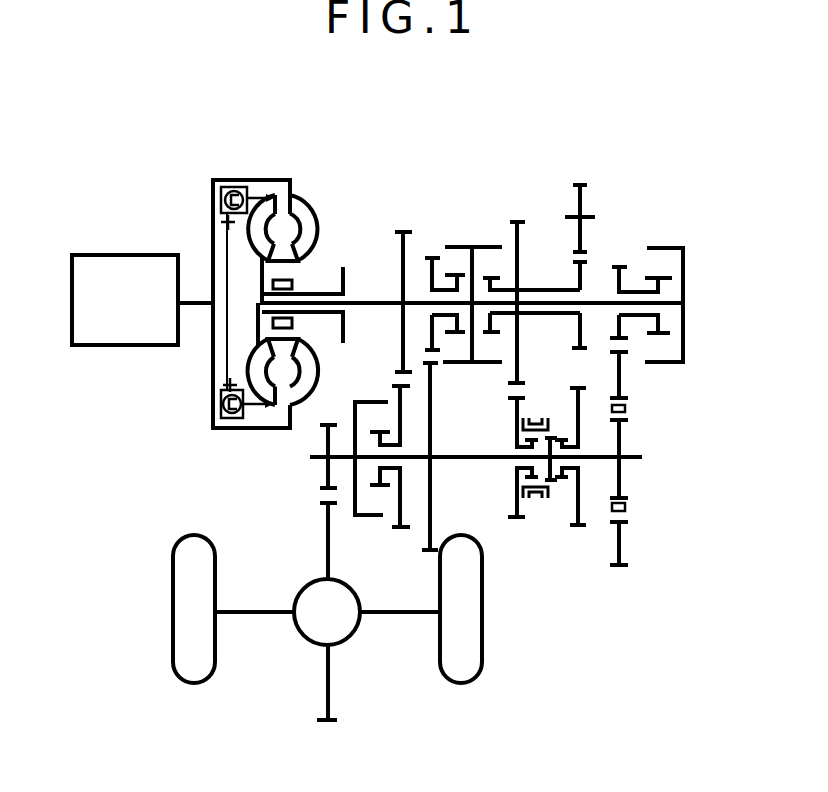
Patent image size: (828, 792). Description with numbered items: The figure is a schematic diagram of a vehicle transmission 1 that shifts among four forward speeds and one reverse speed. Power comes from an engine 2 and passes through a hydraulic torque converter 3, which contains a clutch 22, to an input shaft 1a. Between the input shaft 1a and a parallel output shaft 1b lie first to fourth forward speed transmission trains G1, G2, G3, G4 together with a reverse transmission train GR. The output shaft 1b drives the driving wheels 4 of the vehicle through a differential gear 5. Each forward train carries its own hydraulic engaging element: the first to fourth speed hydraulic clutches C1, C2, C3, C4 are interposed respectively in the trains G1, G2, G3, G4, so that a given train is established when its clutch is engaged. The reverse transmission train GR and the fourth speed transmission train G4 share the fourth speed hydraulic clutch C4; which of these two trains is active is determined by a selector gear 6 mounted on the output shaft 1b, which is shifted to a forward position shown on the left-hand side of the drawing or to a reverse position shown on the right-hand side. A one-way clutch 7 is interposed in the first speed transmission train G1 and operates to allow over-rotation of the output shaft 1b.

The transmission 1 is at (510, 200).
The input shaft 1a is at (360, 298).
The output shaft 1b is at (467, 460).
The engine 2 is at (132, 265).
The hydraulic torque converter 3 is at (314, 208).
The driving wheels 4 is at (192, 673).
The differential gear 5 is at (342, 630).
The selector gear 6 is at (540, 499).
The one-way clutch 7 is at (626, 408).
The clutch 22 is at (213, 201).
The first speed hydraulic clutch C1 is at (673, 247).
The second speed hydraulic clutch C2 is at (462, 363).
The third speed hydraulic clutch C3 is at (365, 400).
The fourth speed hydraulic clutch C4 is at (477, 247).
The first speed transmission train G1 is at (625, 252).
The second speed transmission train G2 is at (433, 248).
The third speed transmission train G3 is at (404, 220).
The fourth speed transmission train G4 is at (531, 209).
The reverse transmission train GR is at (588, 174).